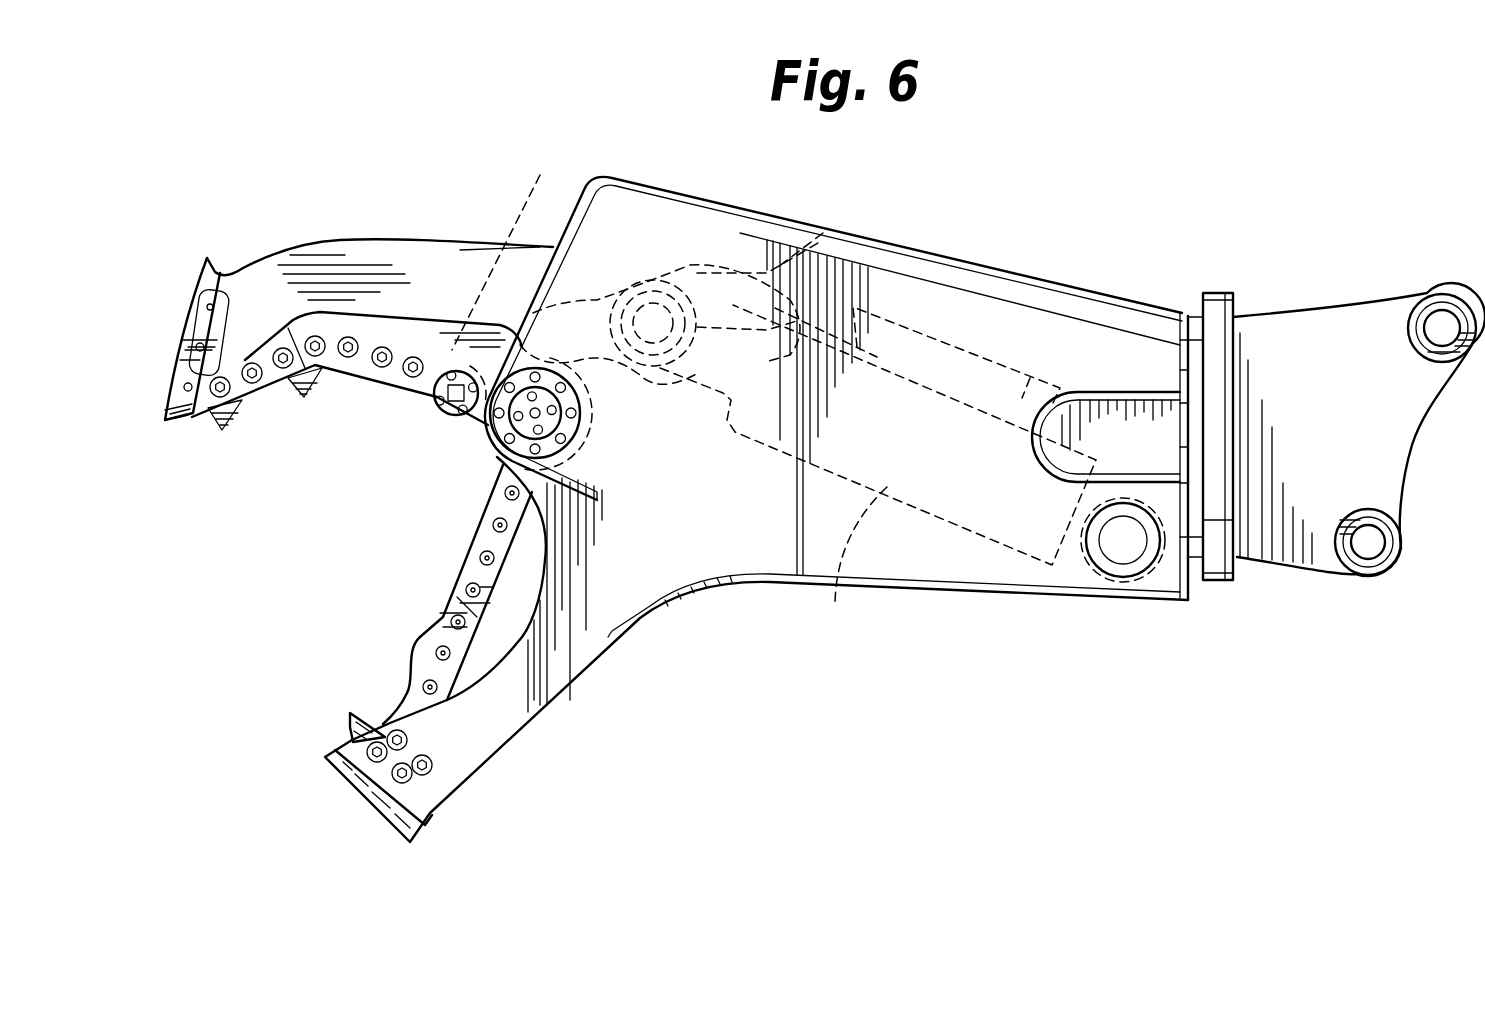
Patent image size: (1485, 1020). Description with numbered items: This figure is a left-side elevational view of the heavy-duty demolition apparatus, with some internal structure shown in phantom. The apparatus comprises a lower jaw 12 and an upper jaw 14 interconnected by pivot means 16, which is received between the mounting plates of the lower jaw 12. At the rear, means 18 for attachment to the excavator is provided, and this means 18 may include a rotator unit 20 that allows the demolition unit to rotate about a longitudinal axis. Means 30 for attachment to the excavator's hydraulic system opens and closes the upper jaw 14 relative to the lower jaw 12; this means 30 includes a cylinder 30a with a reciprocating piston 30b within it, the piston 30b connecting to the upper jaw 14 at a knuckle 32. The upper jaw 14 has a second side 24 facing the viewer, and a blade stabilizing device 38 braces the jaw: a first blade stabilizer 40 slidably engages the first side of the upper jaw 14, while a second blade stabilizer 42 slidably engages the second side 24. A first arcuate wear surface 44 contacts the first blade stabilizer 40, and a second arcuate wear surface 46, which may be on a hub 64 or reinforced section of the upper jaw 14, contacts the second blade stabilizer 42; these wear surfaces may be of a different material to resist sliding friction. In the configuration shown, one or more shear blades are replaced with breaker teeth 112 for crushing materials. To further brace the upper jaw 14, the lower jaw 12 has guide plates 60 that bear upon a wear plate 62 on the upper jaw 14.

The lower jaw 12 is at (547, 703).
The upper jaw 14 is at (353, 240).
The pivot means 16 is at (497, 455).
The means for attachment to the excavator 18 is at (1320, 318).
The rotator unit 20 is at (1233, 293).
The second side 24 is at (480, 258).
The means for attachment to the hydraulic system 30 is at (878, 408).
The cylinder 30a is at (835, 608).
The piston 30b is at (836, 224).
The knuckle 32 is at (796, 190).
The blade stabilizing device 38 is at (548, 284).
The first blade stabilizer 40 is at (567, 300).
The second blade stabilizer 42 is at (445, 413).
The first arcuate wear surface 44 is at (697, 273).
The second arcuate wear surface 46 is at (515, 247).
The guide plates 60 is at (350, 716).
The wear plate 62 is at (217, 293).
The hub 64 is at (403, 330).
The breaker teeth 112 is at (420, 637).